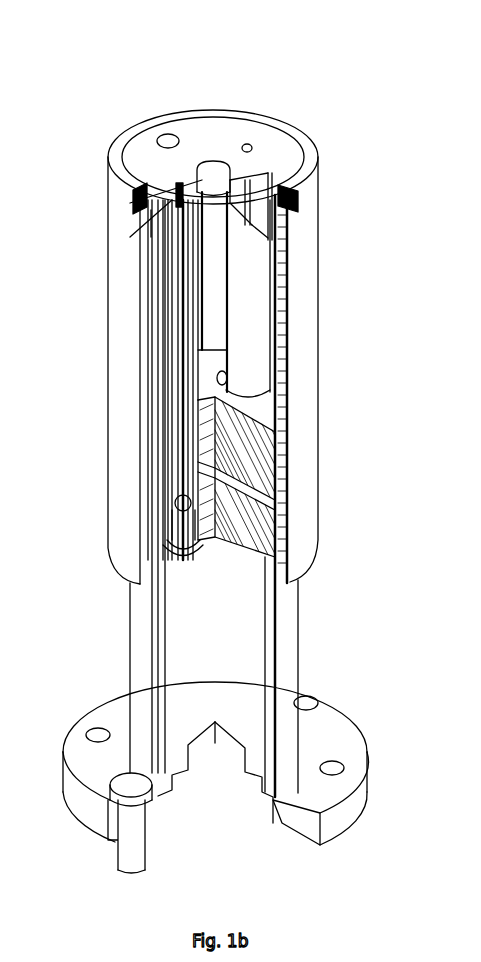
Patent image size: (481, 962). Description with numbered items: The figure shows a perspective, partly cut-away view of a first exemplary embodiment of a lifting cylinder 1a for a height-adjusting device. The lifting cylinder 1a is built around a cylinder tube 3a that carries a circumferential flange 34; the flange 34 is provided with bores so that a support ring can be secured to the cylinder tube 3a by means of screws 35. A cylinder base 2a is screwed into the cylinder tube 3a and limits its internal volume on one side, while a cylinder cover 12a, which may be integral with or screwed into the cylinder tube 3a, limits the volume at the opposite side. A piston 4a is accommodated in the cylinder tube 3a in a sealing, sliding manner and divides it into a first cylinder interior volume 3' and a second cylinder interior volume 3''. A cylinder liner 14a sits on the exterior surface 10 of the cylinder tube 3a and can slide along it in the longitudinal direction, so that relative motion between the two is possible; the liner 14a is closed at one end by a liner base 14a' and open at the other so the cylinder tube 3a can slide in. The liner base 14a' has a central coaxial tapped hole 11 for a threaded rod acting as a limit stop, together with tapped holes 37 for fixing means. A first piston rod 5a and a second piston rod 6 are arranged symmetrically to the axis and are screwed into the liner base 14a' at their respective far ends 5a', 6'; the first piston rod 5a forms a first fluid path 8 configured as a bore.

The lifting cylinder 1a is at (381, 72).
The cylinder base 2a is at (187, 720).
The first cylinder interior volume 3' is at (147, 674).
The second cylinder interior volume 3'' is at (298, 507).
The cylinder tube 3a is at (143, 603).
The piston 4a is at (242, 527).
The first piston rod 5a is at (116, 476).
The far end of first piston rod 5a' is at (128, 371).
The second piston rod 6 is at (279, 305).
The far end of second piston rod 6' is at (308, 485).
The first fluid path 8 is at (180, 310).
The exterior surface of cylinder tube 10 is at (143, 637).
The central coaxial tapped hole 11 is at (226, 163).
The cylinder cover 12a is at (242, 443).
The cylinder liner 14a is at (267, 347).
The liner base 14a' is at (213, 117).
The circumferential flange 34 is at (317, 787).
The screws 35 is at (130, 788).
The tapped holes 37 is at (164, 135).